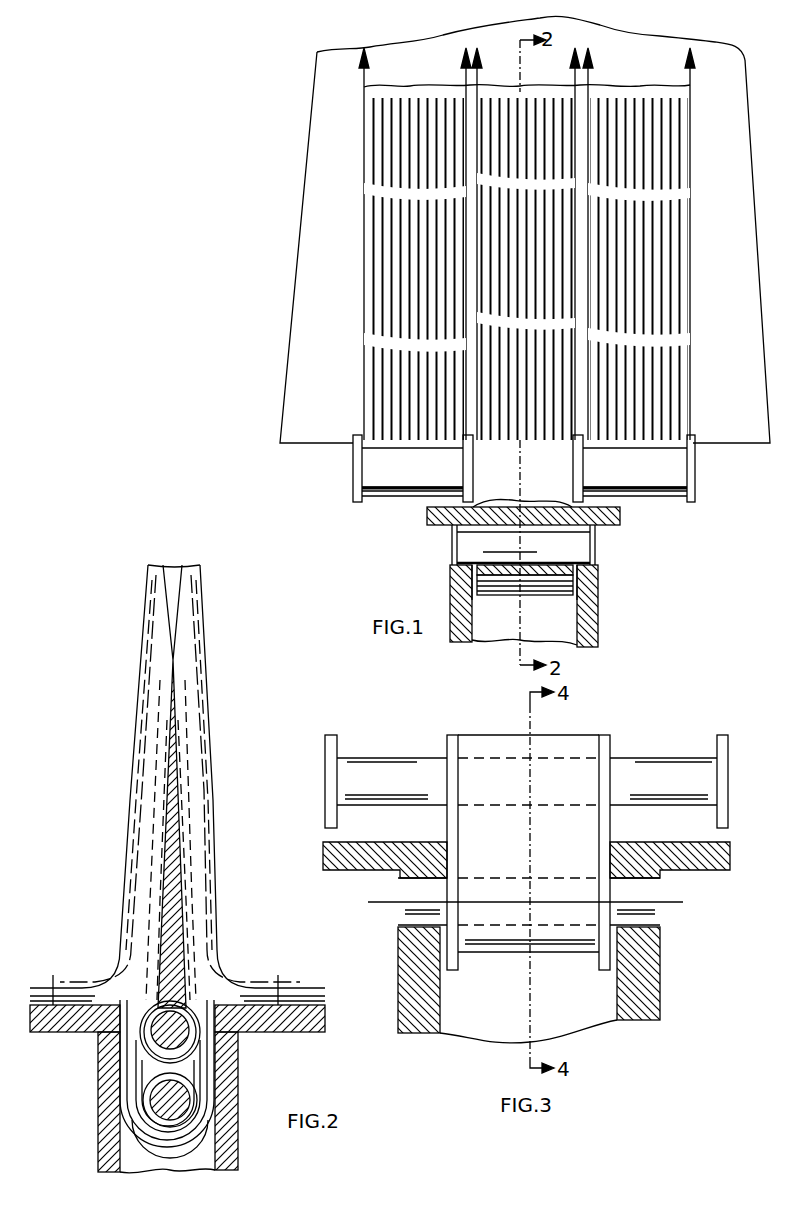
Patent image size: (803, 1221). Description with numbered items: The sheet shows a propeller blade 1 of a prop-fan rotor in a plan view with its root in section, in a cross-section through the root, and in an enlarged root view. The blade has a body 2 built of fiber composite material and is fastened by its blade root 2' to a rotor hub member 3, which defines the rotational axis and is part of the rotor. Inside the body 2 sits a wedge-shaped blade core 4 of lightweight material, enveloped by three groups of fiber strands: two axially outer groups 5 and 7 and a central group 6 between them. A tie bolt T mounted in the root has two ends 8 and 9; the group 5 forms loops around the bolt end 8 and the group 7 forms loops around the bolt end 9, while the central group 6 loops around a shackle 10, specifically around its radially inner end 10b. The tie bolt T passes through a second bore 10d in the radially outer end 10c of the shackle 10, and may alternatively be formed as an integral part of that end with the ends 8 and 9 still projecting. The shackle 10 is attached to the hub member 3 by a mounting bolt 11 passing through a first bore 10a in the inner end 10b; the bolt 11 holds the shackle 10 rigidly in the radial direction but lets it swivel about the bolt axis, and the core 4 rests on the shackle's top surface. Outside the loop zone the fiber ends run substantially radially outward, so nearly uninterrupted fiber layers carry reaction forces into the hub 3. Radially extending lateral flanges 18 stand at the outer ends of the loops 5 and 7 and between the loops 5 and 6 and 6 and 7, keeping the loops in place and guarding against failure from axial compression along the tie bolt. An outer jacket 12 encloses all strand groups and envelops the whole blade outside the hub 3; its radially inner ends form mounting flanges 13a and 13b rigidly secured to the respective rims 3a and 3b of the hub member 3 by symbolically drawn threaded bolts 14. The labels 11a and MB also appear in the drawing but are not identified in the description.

In FIG. 1, the propeller blade 1 is at (290, 216).
In FIG. 2, the propeller blade 1 is at (230, 618).
In FIG. 1, the blade body 2 is at (525, 229).
In FIG. 2, the blade body 2 is at (177, 776).
In FIG. 2, the blade root 2' is at (68, 1111).
In FIG. 1, the rotor hub member 3 is at (590, 606).
In FIG. 2, the rotor hub member 3 is at (218, 1140).
In FIG. 3, the rotor hub member 3 is at (650, 990).
In FIG. 2, the rim 3a is at (312, 1034).
In FIG. 3, the rim 3a is at (348, 870).
In FIG. 2, the rim 3b is at (47, 1034).
In FIG. 3, the rim 3b is at (712, 870).
In FIG. 2, the blade core 4 is at (172, 889).
In FIG. 1, the group of fiber strands 5 is at (400, 393).
In FIG. 2, the group of fiber strands 5 is at (190, 889).
In FIG. 1, the central group of fiber strands 6 is at (490, 295).
In FIG. 2, the central group of fiber strands 6 is at (207, 930).
In FIG. 1, the group of fiber strands 7 is at (668, 327).
In FIG. 2, the group of fiber strands 7 is at (187, 840).
In FIG. 1, the tie bolt end 8 is at (384, 480).
In FIG. 2, the tie bolt end 8 is at (186, 1040).
In FIG. 3, the tie bolt end 8 is at (378, 770).
In FIG. 1, the tie bolt end 9 is at (683, 470).
In FIG. 2, the tie bolt end 9 is at (170, 1032).
In FIG. 3, the tie bolt end 9 is at (655, 772).
In FIG. 1, the shackle 10 is at (452, 527).
In FIG. 2, the shackle 10 is at (200, 1075).
In FIG. 3, the shackle 10 is at (505, 854).
In FIG. 3, the first bore 10a is at (492, 932).
In FIG. 2, the radially inner shackle end 10b is at (214, 1150).
In FIG. 3, the radially inner shackle end 10b is at (565, 932).
In FIG. 3, the radially outer shackle end 10c is at (574, 745).
In FIG. 3, the second bore 10d is at (512, 748).
In FIG. 1, the mounting bolt 11 is at (590, 548).
In FIG. 2, the mounting bolt 11 is at (197, 1105).
In FIG. 3, the mounting bolt 11 is at (650, 912).
In FIG. 1, the sleeve wall 11a is at (455, 569).
In FIG. 2, the outer jacket 12 is at (214, 848).
In FIG. 2, the mounting flange 13a is at (300, 996).
In FIG. 2, the mounting flange 13b is at (74, 996).
In FIG. 2, the threaded bolts 14 is at (161, 980).
In FIG. 1, the lateral flanges 18 is at (354, 470).
In FIG. 3, the lateral flanges 18 is at (336, 740).
In FIG. 3, the tie bolt T is at (421, 756).
In FIG. 3, the bending line MB is at (395, 904).